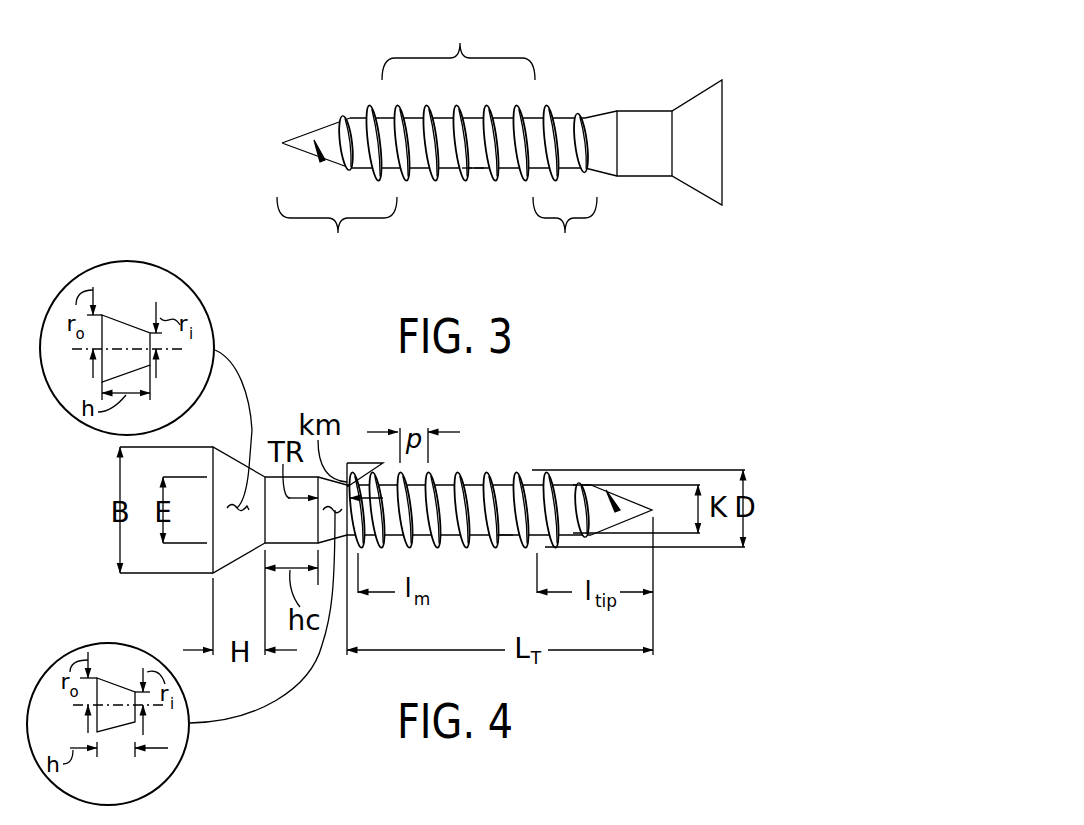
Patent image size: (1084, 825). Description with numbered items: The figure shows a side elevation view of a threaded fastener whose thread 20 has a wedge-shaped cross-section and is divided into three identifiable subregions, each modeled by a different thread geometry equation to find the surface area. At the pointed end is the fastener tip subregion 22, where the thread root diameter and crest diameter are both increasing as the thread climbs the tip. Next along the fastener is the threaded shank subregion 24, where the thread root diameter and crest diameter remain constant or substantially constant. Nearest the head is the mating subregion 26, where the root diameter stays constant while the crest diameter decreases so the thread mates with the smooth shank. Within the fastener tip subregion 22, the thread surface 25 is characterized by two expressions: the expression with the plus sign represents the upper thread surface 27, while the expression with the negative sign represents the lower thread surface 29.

In FIG. 3, the thread 20 is at (499, 134).
In FIG. 3, the fastener tip subregion 22 is at (337, 193).
In FIG. 3, the threaded shank subregion 24 is at (477, 138).
In FIG. 3, the thread surface 25 is at (553, 108).
In FIG. 4, the thread surface 25 is at (487, 471).
In FIG. 3, the mating subregion 26 is at (575, 189).
In FIG. 3, the upper thread surface 27 is at (467, 181).
In FIG. 4, the upper thread surface 27 is at (507, 545).
In FIG. 3, the lower thread surface 29 is at (476, 181).
In FIG. 4, the lower thread surface 29 is at (500, 545).